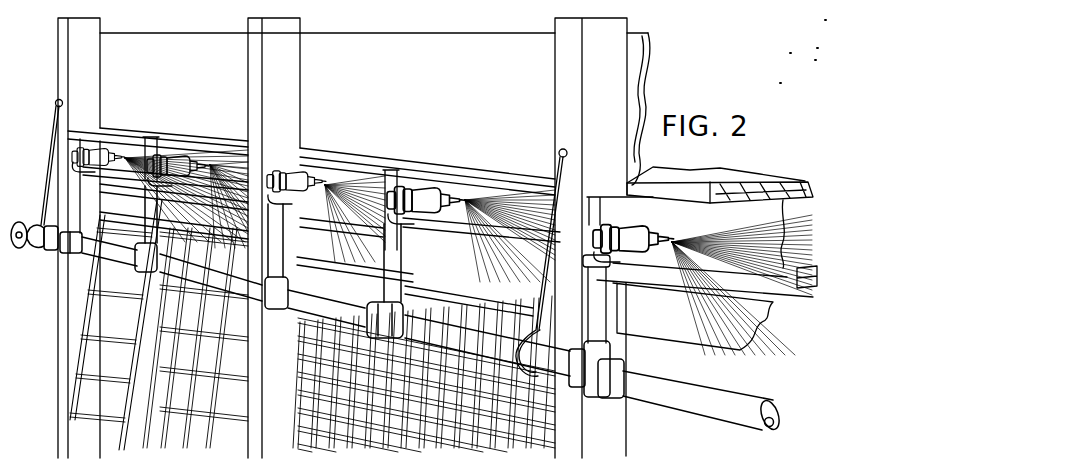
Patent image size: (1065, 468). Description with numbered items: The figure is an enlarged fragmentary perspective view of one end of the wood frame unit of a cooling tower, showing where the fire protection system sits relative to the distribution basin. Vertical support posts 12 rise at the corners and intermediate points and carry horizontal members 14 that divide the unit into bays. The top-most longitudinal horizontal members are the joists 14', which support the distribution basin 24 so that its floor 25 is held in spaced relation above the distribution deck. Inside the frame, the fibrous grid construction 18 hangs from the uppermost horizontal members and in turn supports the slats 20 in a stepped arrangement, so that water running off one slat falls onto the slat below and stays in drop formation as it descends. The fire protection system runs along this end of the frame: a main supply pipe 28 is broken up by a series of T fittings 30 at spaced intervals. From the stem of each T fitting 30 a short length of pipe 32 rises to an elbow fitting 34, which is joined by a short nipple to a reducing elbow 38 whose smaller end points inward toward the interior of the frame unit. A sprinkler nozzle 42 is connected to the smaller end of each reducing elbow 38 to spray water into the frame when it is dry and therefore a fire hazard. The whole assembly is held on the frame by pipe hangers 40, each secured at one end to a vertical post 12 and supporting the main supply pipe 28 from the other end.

The vertical support posts 12 is at (63, 31).
The distribution basin 24 is at (478, 107).
The joists 14' is at (440, 223).
The sprinkler nozzle 42 is at (451, 205).
The reducing elbow 38 is at (636, 240).
The floor 25 is at (752, 182).
The horizontal members 14 is at (693, 323).
The short length of pipe 32 is at (602, 307).
The elbow fitting 34 is at (590, 276).
The T fittings 30 is at (144, 268).
The supply pipe 28 is at (702, 410).
The pipe hangers 40 is at (53, 172).
The fibrous grid construction 18 is at (110, 335).
The slats 20 is at (168, 374).